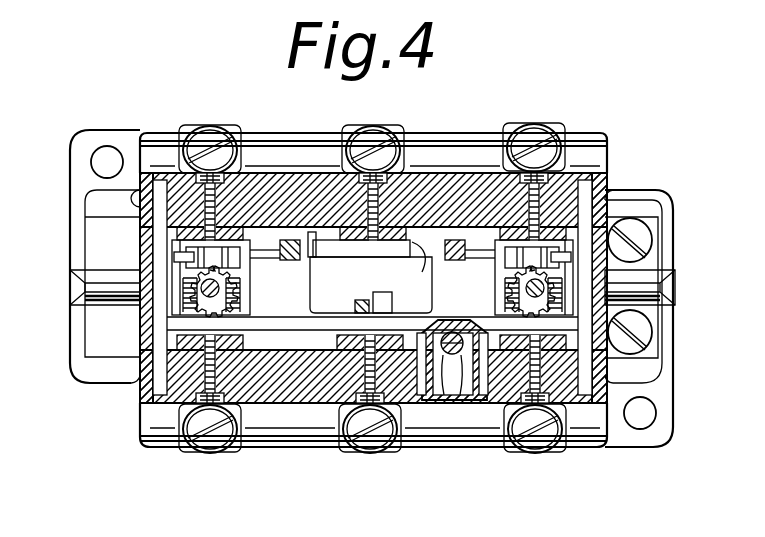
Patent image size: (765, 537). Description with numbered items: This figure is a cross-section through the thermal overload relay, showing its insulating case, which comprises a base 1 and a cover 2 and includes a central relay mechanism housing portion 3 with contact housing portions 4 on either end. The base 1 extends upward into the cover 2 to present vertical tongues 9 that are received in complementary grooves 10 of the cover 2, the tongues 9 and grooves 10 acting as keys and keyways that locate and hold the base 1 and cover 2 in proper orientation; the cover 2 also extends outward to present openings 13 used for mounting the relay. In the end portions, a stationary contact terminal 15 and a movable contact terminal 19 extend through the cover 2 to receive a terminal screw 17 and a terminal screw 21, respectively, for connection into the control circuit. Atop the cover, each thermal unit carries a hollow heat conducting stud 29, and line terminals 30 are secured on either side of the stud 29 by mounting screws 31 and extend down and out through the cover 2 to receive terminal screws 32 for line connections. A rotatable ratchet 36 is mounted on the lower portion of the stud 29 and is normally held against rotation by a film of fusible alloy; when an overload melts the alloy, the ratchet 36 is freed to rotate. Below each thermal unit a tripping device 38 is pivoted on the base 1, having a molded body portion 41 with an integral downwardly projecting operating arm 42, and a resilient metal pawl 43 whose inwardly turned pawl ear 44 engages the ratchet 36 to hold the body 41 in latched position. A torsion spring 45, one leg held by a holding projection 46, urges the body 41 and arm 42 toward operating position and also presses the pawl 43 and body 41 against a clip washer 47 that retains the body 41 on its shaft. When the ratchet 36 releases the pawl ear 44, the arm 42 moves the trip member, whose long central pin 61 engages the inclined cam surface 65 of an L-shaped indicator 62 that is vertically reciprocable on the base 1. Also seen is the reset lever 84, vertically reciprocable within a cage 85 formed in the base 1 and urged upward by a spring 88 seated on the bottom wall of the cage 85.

The base 1 is at (447, 245).
The cover 2 is at (607, 152).
The central relay mechanism housing portion 3 is at (481, 134).
The contact housing portions 4 is at (80, 205).
The vertical tongues 9 is at (158, 233).
The slots or grooves 10 is at (150, 188).
The openings 13 is at (92, 164).
The stationary contact terminal 15 is at (652, 225).
The terminal screw 17 is at (645, 241).
The movable contact terminal 19 is at (652, 320).
The terminal screw 21 is at (644, 333).
The heat conducting stud 29 is at (200, 292).
The line terminals 30 is at (222, 125).
The mounting screws 31 is at (225, 180).
The terminal screws 32 is at (222, 140).
The rotatable ratchet 36 is at (243, 290).
The tripping device 38 is at (178, 262).
The body portion 41 is at (280, 248).
The operating arm 42 is at (512, 230).
The resilient metal pawl 43 is at (175, 254).
The pawl ear 44 is at (132, 274).
The torsion spring 45 is at (242, 299).
The holding projection 46 is at (228, 311).
The clip washer 47 is at (245, 240).
The central pin 61 is at (386, 247).
The indicator 62 is at (312, 262).
The inclined cam surface 65 is at (420, 261).
The reset lever 84 is at (473, 348).
The cage 85 is at (423, 400).
The spring 88 is at (452, 365).